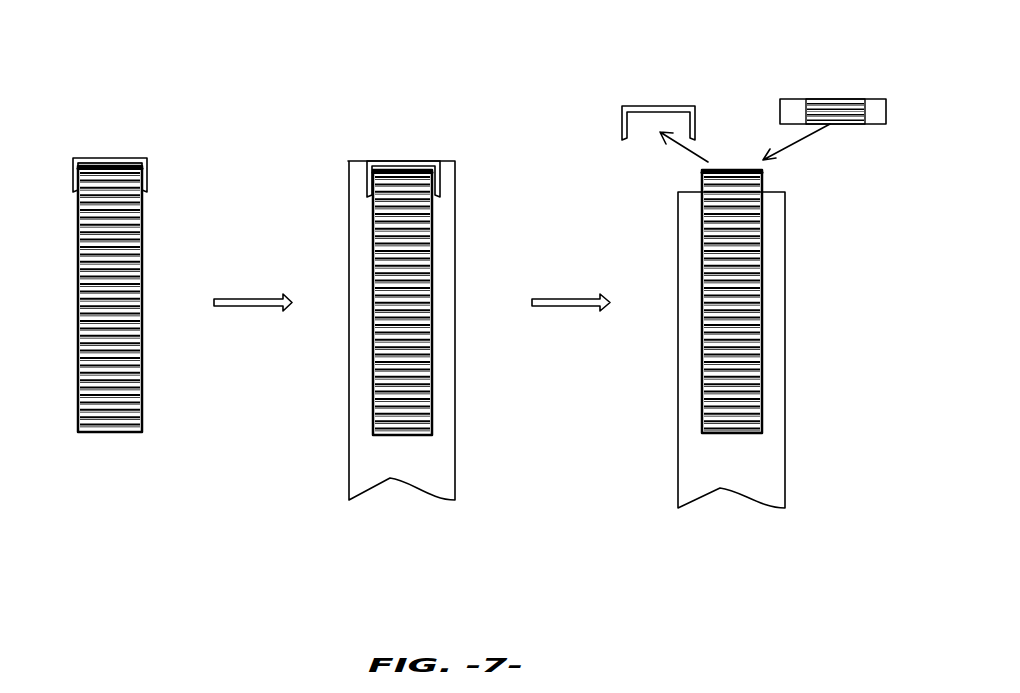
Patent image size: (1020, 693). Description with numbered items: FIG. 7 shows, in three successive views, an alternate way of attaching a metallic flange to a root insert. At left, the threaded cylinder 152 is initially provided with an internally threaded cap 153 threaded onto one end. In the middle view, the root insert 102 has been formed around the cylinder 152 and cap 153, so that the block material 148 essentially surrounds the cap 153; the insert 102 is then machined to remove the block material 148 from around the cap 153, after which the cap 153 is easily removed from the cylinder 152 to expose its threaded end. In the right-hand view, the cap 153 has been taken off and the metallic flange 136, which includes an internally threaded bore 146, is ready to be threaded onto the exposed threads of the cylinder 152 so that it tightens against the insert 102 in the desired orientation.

The root insert 102 is at (478, 188).
The metallic flange 136 is at (796, 82).
The internally threaded bore 146 is at (838, 99).
The block material 148 is at (348, 294).
The threaded cylinder 152 is at (141, 290).
The internally threaded cap 153 is at (98, 158).